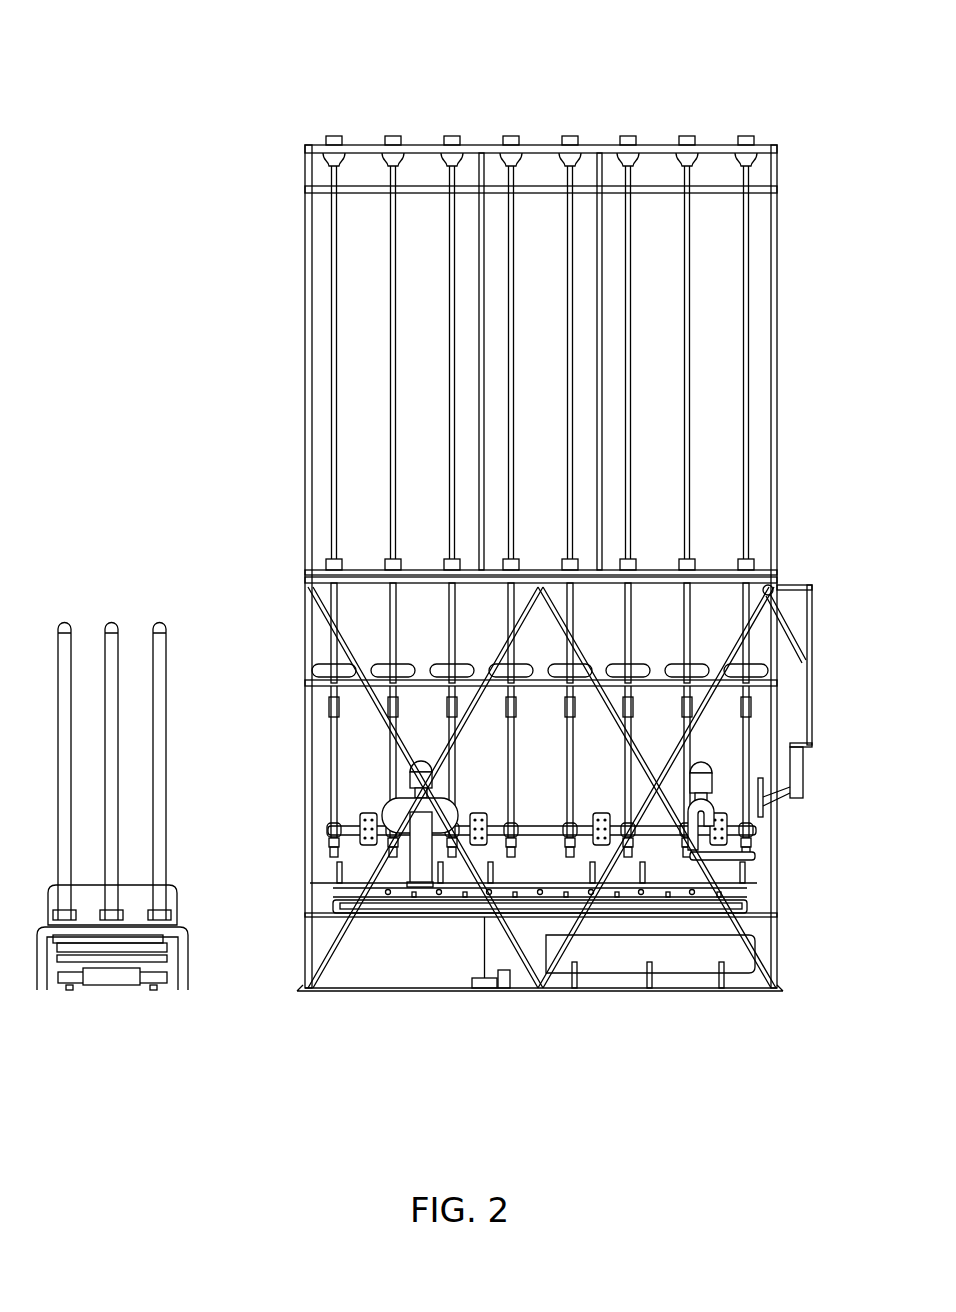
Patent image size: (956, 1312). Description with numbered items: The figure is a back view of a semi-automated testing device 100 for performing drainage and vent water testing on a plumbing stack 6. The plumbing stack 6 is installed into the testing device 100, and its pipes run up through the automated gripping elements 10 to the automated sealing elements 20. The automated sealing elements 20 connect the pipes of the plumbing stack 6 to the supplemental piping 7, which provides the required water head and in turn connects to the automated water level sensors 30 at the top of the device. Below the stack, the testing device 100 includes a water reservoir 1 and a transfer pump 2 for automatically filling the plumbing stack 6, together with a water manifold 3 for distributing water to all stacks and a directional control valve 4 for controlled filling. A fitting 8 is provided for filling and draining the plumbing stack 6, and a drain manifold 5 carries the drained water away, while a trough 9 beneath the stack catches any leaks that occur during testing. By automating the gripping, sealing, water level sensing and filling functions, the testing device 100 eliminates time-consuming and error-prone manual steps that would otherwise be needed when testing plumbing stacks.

The testing device 100 is at (165, 45).
The automated water level sensor 30 is at (322, 152).
The supplemental piping 7 is at (333, 306).
The automated sealing element 20 is at (320, 556).
The automated gripping element 10 is at (318, 668).
The plumbing stack 6 is at (330, 745).
The fitting 8 is at (335, 872).
The directional control valve 4 is at (727, 883).
The water manifold 3 is at (710, 863).
The drain manifold 5 is at (750, 887).
The trough 9 is at (763, 903).
The transfer pump 2 is at (497, 986).
The water reservoir 1 is at (738, 975).